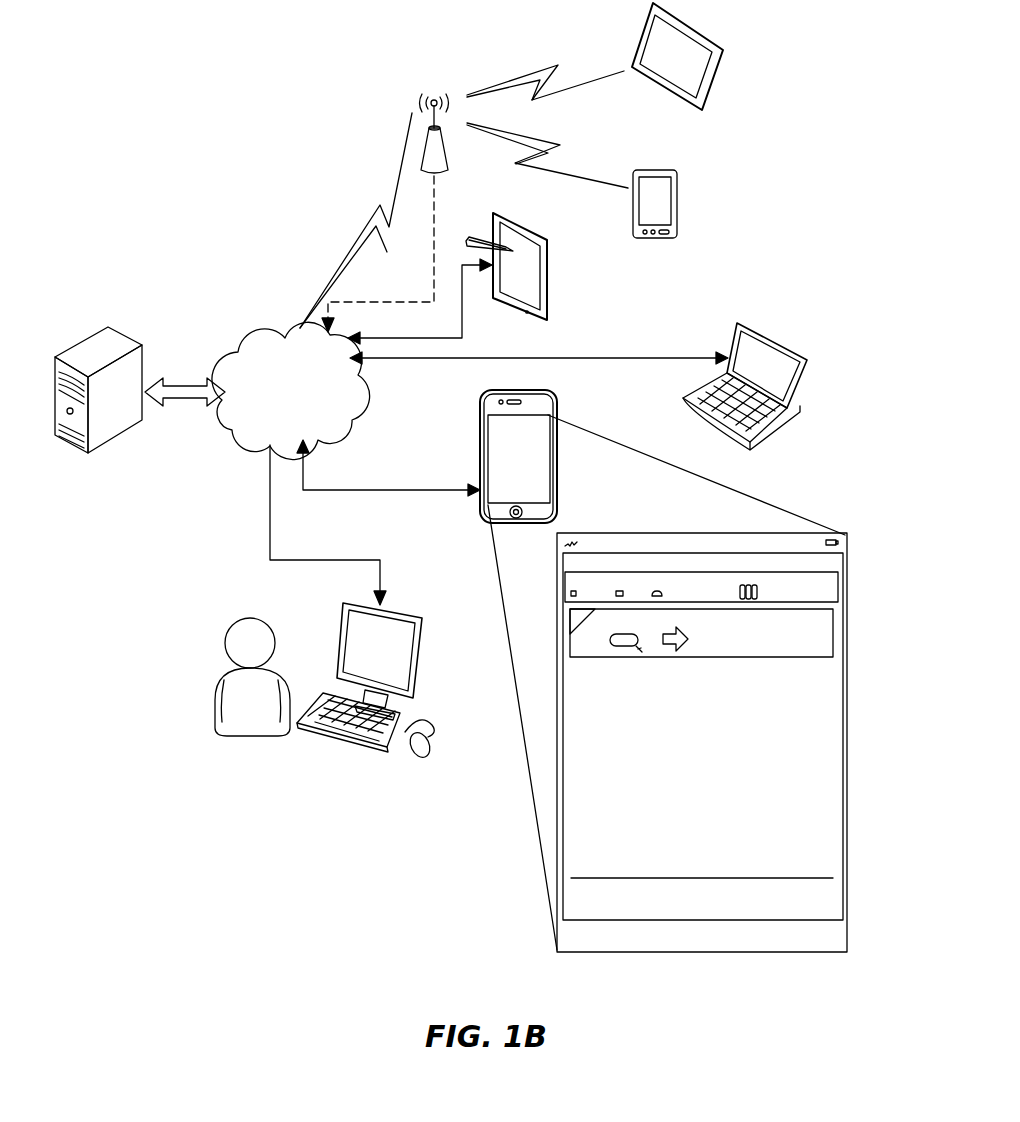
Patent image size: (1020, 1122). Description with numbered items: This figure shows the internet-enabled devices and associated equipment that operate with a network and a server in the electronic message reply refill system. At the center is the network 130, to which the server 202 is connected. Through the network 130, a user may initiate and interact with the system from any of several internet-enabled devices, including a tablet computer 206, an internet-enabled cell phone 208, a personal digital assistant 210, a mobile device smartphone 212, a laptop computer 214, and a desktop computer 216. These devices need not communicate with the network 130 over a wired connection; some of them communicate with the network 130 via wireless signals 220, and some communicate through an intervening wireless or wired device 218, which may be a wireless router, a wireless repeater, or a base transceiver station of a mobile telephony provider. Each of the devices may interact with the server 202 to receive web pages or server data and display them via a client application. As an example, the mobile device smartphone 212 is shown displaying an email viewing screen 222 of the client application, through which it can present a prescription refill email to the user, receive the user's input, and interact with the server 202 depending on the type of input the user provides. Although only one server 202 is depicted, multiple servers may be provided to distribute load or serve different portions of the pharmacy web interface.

The network 130 is at (268, 338).
The server 202 is at (96, 334).
The tablet computer 206 is at (712, 96).
The internet-enabled cell phone 208 is at (680, 204).
The personal digital assistant (PDA) 210 is at (548, 268).
The mobile device smartphone 212 is at (556, 400).
The laptop computer 214 is at (775, 334).
The desktop computer 216 is at (393, 612).
The intervening wireless or wired device 218 is at (446, 142).
The wireless signals 220 is at (515, 80).
The email viewing screen 222 is at (745, 952).